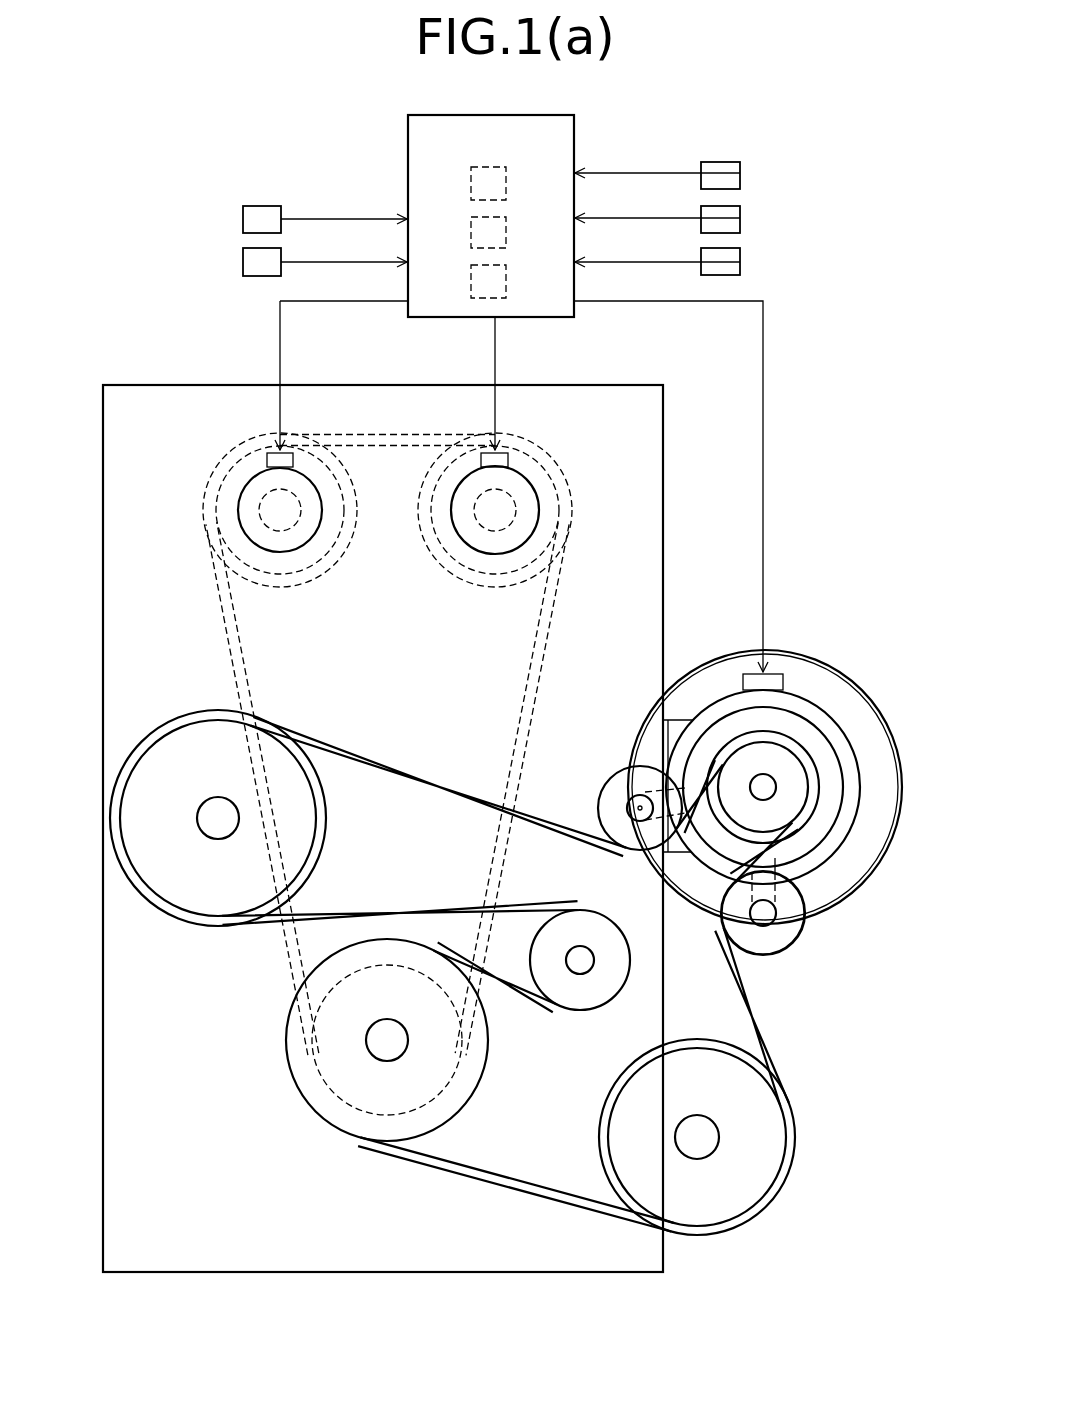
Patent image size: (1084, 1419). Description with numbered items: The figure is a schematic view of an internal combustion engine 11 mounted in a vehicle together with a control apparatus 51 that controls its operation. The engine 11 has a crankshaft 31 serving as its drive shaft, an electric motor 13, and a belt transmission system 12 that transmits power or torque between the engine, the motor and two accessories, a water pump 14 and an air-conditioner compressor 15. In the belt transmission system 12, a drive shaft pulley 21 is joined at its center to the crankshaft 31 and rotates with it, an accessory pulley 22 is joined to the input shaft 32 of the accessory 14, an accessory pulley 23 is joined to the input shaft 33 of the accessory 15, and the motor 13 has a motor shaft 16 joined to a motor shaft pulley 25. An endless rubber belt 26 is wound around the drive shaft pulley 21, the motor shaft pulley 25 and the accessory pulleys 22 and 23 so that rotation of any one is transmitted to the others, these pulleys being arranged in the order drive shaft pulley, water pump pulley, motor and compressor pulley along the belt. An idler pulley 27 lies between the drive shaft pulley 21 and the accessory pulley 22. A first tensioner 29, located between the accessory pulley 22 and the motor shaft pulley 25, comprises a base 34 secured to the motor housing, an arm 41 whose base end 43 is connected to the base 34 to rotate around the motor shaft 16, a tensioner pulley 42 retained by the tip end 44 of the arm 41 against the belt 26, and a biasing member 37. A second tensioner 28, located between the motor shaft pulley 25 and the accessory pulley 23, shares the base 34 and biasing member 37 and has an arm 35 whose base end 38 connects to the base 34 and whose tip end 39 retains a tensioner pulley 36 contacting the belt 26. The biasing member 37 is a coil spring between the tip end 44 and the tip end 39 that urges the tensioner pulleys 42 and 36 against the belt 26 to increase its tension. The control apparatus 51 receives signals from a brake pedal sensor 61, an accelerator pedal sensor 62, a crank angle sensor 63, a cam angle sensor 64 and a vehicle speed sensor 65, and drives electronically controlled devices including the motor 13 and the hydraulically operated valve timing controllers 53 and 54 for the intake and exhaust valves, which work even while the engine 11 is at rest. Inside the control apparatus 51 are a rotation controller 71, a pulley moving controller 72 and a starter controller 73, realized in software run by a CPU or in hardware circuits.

The internal combustion engine 11 is at (148, 385).
The belt transmission system 12 is at (190, 690).
The electric motor 13 is at (728, 695).
The accessory 14 is at (140, 895).
The accessory 15 is at (795, 1157).
The motor shaft 16 is at (803, 813).
The drive shaft pulley 21 is at (298, 1028).
The accessory pulley 22 is at (198, 888).
The accessory pulley 23 is at (738, 1175).
The motor shaft pulley 25 is at (797, 785).
The belt 26 is at (455, 790).
The idler pulley 27 is at (577, 923).
The second tensioner 28 is at (806, 935).
The first tensioner 29 is at (610, 773).
The crankshaft 31 is at (385, 1042).
The input shaft 32 is at (222, 818).
The input shaft 33 is at (700, 1137).
The base 34 is at (825, 802).
The arm 35 is at (762, 887).
The tensioner pulley 36 is at (766, 948).
The biasing member 37 is at (862, 688).
The base end 38 is at (777, 865).
The tip end 39 is at (760, 912).
The arm 41 is at (663, 800).
The tensioner pulley 42 is at (628, 806).
The base end 43 is at (687, 787).
The tip end 44 is at (640, 815).
The control apparatus 51 is at (432, 115).
The valve timing controller 53 is at (250, 510).
The valve timing controller 54 is at (527, 508).
The brake pedal sensor 61 is at (243, 220).
The accelerator pedal sensor 62 is at (243, 262).
The crank angle sensor 63 is at (740, 176).
The cam angle sensor 64 is at (740, 220).
The vehicle speed sensor 65 is at (740, 263).
The rotation controller 71 is at (508, 183).
The pulley moving controller 72 is at (508, 233).
The starter controller 73 is at (508, 282).